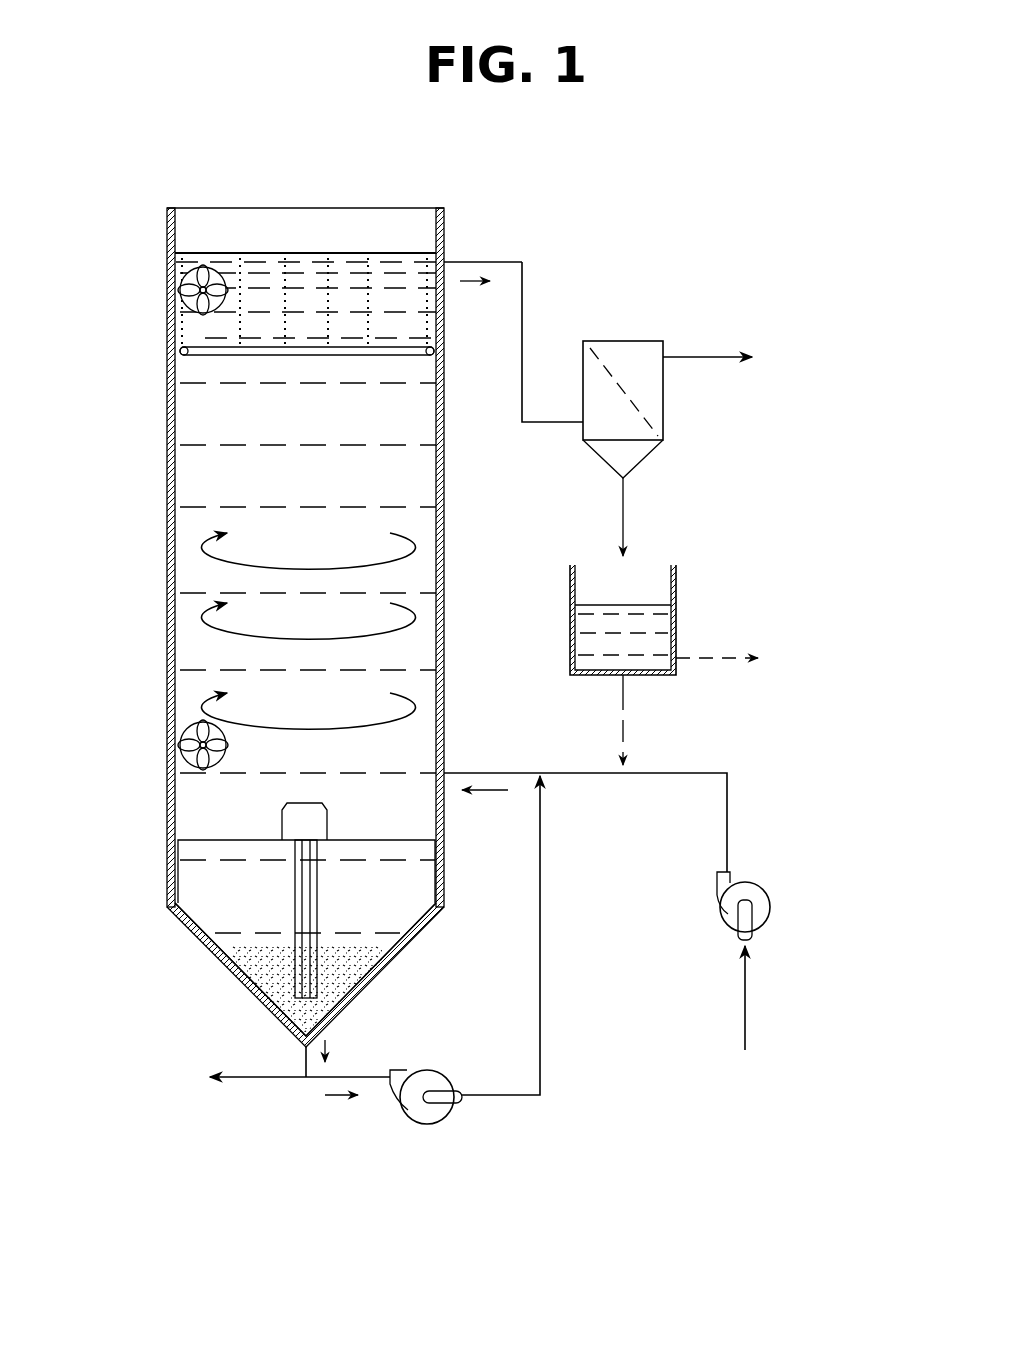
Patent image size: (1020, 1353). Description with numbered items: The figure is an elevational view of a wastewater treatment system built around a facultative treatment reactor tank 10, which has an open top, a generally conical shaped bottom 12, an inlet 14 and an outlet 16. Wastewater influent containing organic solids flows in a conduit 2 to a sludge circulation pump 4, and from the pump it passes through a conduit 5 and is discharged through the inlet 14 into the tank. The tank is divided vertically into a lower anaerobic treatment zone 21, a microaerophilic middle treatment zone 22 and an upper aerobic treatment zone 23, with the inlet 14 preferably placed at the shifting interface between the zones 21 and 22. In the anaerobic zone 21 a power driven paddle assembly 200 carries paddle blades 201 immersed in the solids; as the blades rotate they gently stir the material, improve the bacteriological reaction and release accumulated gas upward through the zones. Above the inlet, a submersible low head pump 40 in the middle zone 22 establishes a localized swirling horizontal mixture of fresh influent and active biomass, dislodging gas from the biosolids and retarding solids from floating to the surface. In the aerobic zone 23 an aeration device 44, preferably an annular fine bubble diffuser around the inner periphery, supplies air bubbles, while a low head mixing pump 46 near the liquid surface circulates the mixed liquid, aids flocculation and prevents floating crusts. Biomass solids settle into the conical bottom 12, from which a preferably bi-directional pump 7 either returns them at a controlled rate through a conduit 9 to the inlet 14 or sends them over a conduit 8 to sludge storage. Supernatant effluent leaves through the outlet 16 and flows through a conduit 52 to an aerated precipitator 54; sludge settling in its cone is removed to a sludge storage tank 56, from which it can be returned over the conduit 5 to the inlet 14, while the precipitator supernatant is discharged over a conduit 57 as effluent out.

The facultative treatment reactor tank 10 is at (400, 193).
The conical shaped bottom 12 is at (246, 988).
The outlet 16 is at (485, 260).
The aerobic treatment zone 23 is at (200, 377).
The low head mixing pump 46 is at (182, 291).
The aeration device 44 is at (276, 355).
The microaerophilic middle treatment zone 22 is at (200, 575).
The low head pump 40 is at (181, 752).
The lower anaerobic treatment zone 21 is at (202, 885).
The power driven paddle assembly 200 is at (327, 820).
The paddle blades 201 is at (298, 857).
The conduit 52 is at (523, 318).
The aerated precipitator 54 is at (664, 424).
The conduit 57 is at (722, 357).
The sludge storage tank 56 is at (662, 590).
The inlet 14 is at (497, 773).
The conduit 5 is at (588, 773).
The sludge circulation pump 4 is at (765, 906).
The conduit 2 is at (746, 1020).
The conduit 9 is at (541, 1006).
The pump 7 is at (420, 1113).
The conduit 8 is at (248, 1078).